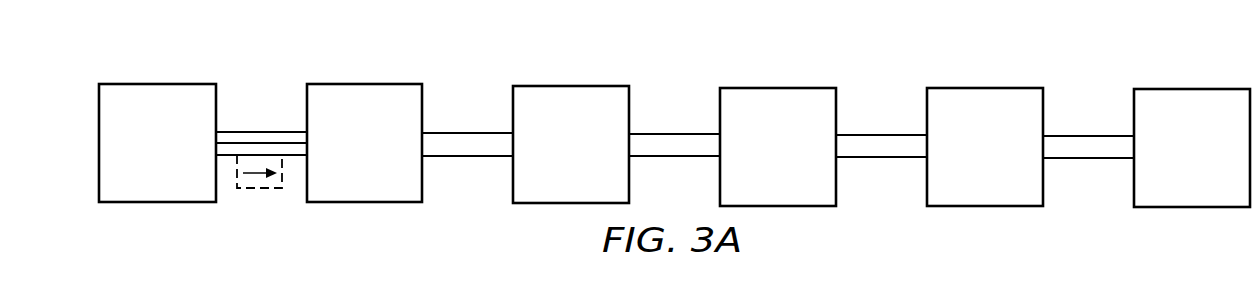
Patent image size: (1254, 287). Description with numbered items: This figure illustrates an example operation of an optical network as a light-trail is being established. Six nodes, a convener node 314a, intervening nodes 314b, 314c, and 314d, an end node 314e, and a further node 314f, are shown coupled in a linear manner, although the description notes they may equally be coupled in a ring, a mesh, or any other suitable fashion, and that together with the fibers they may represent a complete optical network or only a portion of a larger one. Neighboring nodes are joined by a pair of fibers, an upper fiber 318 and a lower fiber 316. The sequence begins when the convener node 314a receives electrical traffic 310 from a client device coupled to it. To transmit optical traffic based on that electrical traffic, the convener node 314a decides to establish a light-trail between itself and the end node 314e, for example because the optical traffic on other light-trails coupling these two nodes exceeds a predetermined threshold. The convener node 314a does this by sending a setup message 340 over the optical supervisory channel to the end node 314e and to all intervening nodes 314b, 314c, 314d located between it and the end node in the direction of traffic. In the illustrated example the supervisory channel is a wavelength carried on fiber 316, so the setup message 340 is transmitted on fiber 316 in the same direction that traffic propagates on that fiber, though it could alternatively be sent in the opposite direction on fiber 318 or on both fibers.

The electrical traffic 310 is at (157, 202).
The convener node 314a is at (135, 84).
The intervening node 314b is at (364, 84).
The intervening node 314c is at (568, 86).
The intervening node 314d is at (778, 88).
The end node 314e is at (985, 88).
The node 314f is at (1193, 89).
The fiber 316 is at (1083, 158).
The fiber 318 is at (1083, 136).
The setup message 340 is at (263, 188).